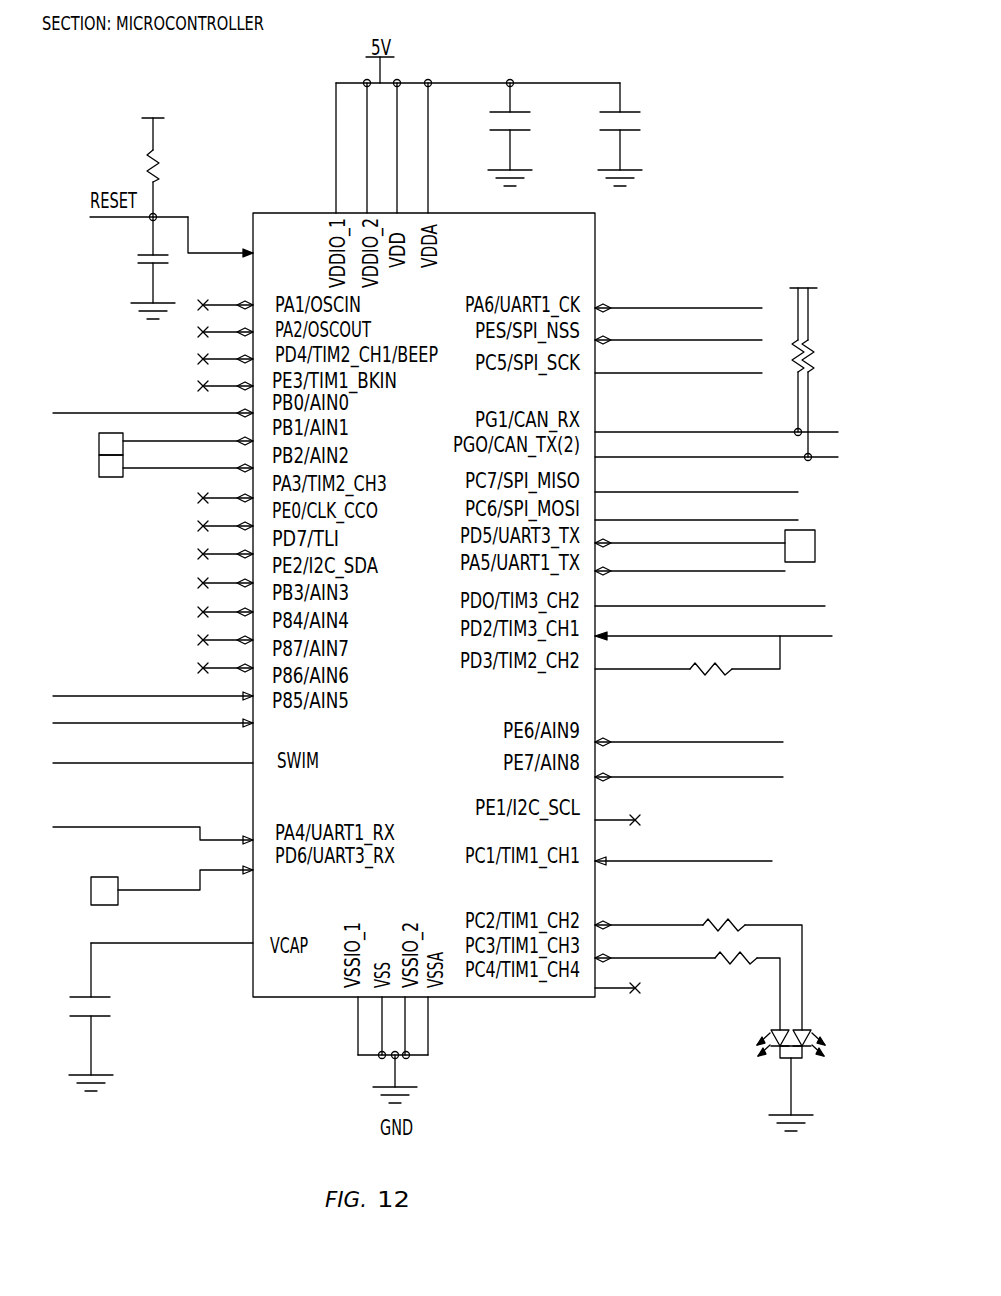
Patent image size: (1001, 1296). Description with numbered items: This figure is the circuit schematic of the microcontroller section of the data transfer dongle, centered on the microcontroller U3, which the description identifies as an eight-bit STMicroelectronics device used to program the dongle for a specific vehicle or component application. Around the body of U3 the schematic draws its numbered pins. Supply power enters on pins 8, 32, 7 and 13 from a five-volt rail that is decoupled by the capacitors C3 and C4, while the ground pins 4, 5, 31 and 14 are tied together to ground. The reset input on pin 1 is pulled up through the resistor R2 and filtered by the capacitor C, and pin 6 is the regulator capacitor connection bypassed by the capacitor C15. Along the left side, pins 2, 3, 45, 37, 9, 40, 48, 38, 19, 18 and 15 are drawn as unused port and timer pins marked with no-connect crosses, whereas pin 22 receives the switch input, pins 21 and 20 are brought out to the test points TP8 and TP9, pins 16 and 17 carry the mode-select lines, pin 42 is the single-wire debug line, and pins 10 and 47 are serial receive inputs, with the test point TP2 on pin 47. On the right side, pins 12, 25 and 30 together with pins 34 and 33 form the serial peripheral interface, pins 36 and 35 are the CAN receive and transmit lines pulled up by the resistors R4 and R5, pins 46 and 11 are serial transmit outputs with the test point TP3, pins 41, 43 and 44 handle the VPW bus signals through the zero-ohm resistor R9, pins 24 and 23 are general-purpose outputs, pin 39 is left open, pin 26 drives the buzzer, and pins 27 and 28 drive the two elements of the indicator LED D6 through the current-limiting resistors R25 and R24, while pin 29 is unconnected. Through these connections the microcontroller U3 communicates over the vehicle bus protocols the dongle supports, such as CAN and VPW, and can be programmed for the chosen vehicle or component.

The microcontroller STM8S208CBT6 U3 is at (402, 607).
The pin 1 NRST 1 is at (220, 237).
The pin 2 PA1/OSCIN 2 is at (225, 295).
The pin 3 PA2/OSCOUT 3 is at (225, 322).
The CAN transceiver 45 is at (225, 349).
The pin 37 PE3/TIM1_BKIN 37 is at (225, 376).
The pin 22 PB0/AIN0 switch input 22 is at (153, 402).
The pin 21 PB1/AIN1 21 is at (188, 431).
The pin 20 PB2/AIN2 20 is at (188, 458).
The pin 9 PA3/TIM2_CH3 9 is at (225, 488).
The printed circuit boards 40 is at (225, 516).
The pin 48 PD7/TLI 48 is at (225, 544).
The pin 38 PE2/I2C_SDA 38 is at (225, 573).
The pin 19 PB3/AIN3 19 is at (225, 602).
The pin 18 PB4/AIN4 18 is at (225, 630).
The pin 15 PB7/AIN7 15 is at (225, 658).
The pin 16 PB6/AIN6 MODE0 16 is at (153, 683).
The pin 17 PB5/AIN5 MODE1 17 is at (153, 712).
The connector 42 is at (153, 750).
The transfer dongle 10 is at (153, 823).
The pin 47 PD6/UART3_RX 47 is at (185, 866).
The pin 6 VCAP 6 is at (172, 929).
The pin 8 VDDIO_1 8 is at (322, 148).
The pin 32 VDDIO_2 32 is at (357, 147).
The pin 7 VDD 7 is at (384, 147).
The pin 13 VDDA 13 is at (416, 147).
The pin 4 VSSIO_1 4 is at (347, 1026).
The pin 5 VSS 5 is at (372, 1028).
The pin 31 VSSIO_2 31 is at (396, 1028).
The pin 14 VSSA 14 is at (417, 1026).
The pin 12 PA6/UART1_CK SW RXD 12 is at (678, 298).
The pin 25 PE5/SPI_NSS 25 is at (678, 330).
The pin 30 PC5/SPI_SCK 30 is at (678, 361).
The pin 36 PG1/CAN_RX 36 is at (719, 420).
The pin 35 PG0/CAN_TX 35 is at (719, 445).
The pin 34 PC7/SPI_MISO 34 is at (696, 479).
The pin 33 PC6/SPI_MOSI 33 is at (696, 507).
The pin 46 PD5/UART3_TX 46 is at (690, 533).
The pin 11 PA5/UART1_TX 11 is at (690, 561).
The arrangement of circuits 41 is at (710, 595).
The power supply 43 is at (713, 626).
The microcontroller 44 is at (642, 656).
The pin 24 PE6/AIN9 GPIO-2 24 is at (689, 730).
The pin 23 PE7/AIN8 GPIO-1 23 is at (689, 765).
The pin 39 PE1/I2C_SCL 39 is at (617, 811).
The pin 26 PC1/TIM1_CH1 buzzer 26 is at (683, 850).
The pin 27 PC2/TIM1_CH2 27 is at (649, 913).
The pin 28 PC3/TIM1_CH3 28 is at (655, 948).
The pin 29 PC4/TIM1_CH4 29 is at (617, 980).
The 1K pull-up resistor R2 is at (143, 155).
The 0.1uF reset capacitor C is at (167, 279).
The 0.1uF decoupling capacitor C3 is at (488, 148).
The 1uF decoupling capacitor C4 is at (603, 140).
The 1uF VCAP capacitor C15 is at (77, 1034).
The 2.7K resistor R4 is at (787, 350).
The 10K resistor R5 is at (823, 374).
The 0.0 ohm resistor R9 is at (733, 670).
The 330 ohm resistor R25 is at (731, 963).
The 330 ohm resistor R24 is at (721, 991).
The bicolor LED D6 is at (797, 1053).
The test point TP2 is at (87, 891).
The test point TP3 is at (817, 546).
The test point TP8 is at (93, 442).
The test point TP9 is at (93, 467).